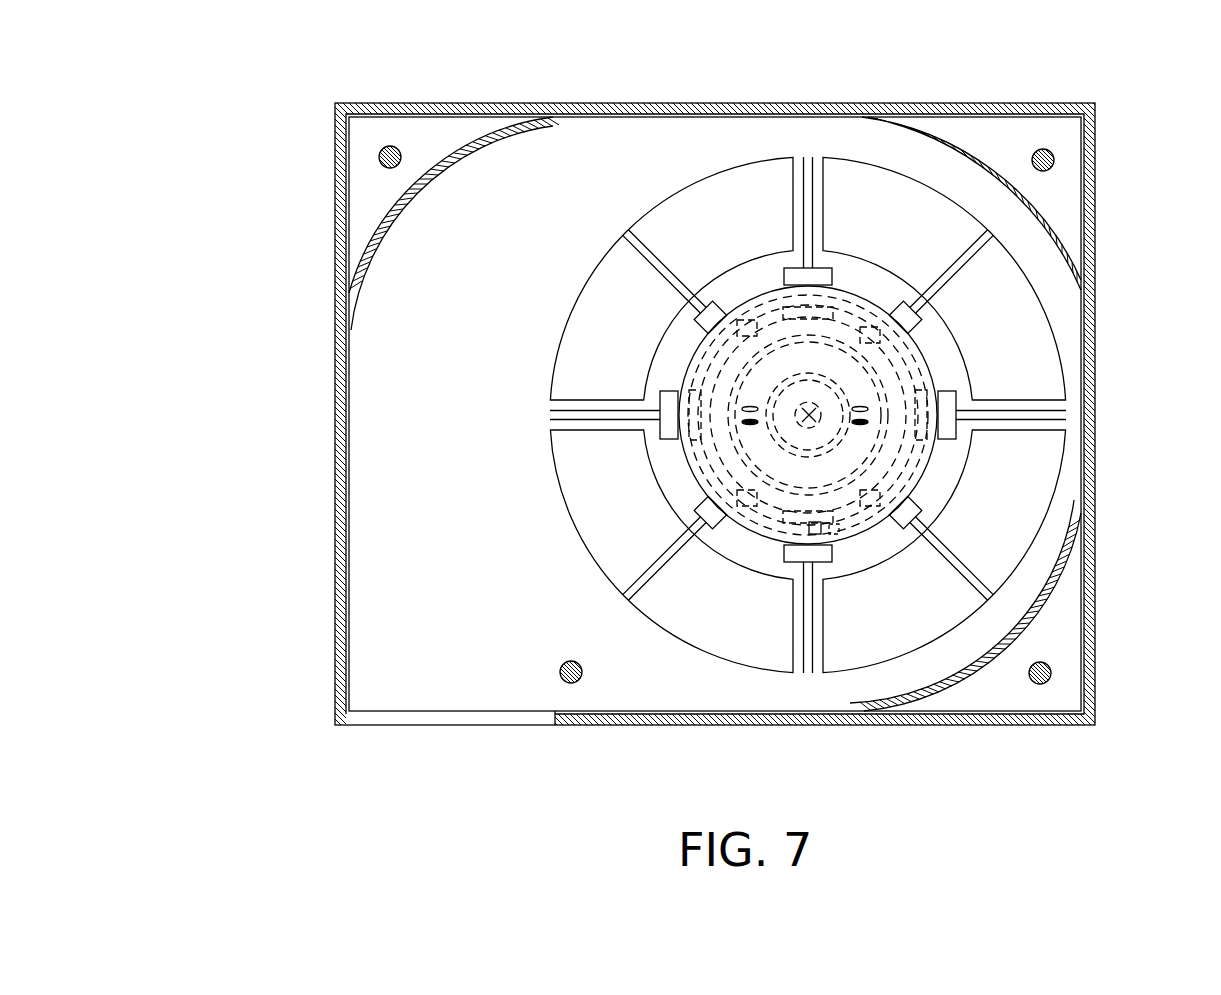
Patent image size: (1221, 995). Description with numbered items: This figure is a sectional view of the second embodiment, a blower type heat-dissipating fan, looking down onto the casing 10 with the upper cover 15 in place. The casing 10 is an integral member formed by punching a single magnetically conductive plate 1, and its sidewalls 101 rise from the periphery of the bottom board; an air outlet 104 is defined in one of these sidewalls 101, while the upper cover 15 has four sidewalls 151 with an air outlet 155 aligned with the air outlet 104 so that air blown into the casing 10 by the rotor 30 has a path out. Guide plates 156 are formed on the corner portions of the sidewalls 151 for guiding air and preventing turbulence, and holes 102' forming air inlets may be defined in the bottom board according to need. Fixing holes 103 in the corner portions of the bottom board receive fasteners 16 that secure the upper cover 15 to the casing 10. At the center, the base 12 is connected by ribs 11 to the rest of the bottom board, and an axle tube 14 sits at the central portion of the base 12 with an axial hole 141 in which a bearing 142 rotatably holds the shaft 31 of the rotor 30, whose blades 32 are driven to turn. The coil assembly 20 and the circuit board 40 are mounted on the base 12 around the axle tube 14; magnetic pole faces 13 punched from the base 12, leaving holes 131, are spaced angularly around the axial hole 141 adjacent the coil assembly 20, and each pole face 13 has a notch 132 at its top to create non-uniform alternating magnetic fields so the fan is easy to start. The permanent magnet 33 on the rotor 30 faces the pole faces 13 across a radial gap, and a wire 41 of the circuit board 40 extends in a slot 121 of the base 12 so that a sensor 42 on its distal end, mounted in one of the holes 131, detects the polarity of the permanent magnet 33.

The magnetically conductive plate 1 is at (606, 143).
The casing 10 is at (641, 414).
The upper cover 15 is at (322, 292).
The sidewalls 151 is at (337, 118).
The sidewalls 101 is at (338, 155).
The air outlet 155 is at (709, 773).
The air outlet 104 is at (405, 716).
The fasteners 16 is at (418, 100).
The fixing holes 103 is at (397, 148).
The guide plate 156 is at (393, 200).
The ribs 11 is at (945, 168).
The holes 102' is at (671, 216).
The base 12 is at (765, 562).
The blades 32 is at (805, 185).
The holes 131 is at (790, 556).
The rotor 30 is at (768, 283).
The magnetic pole faces 13 is at (893, 340).
The notch 132 is at (885, 300).
The axle tube 14 is at (895, 470).
The permanent magnet 33 is at (915, 500).
The coil assembly 20 is at (890, 510).
The shaft 31 is at (812, 415).
The bearing 142 is at (981, 439).
The axial hole 141 is at (850, 428).
The sensor 42 is at (815, 525).
The slot 121 is at (887, 656).
The wire 41 is at (836, 520).
The circuit board 40 is at (915, 525).